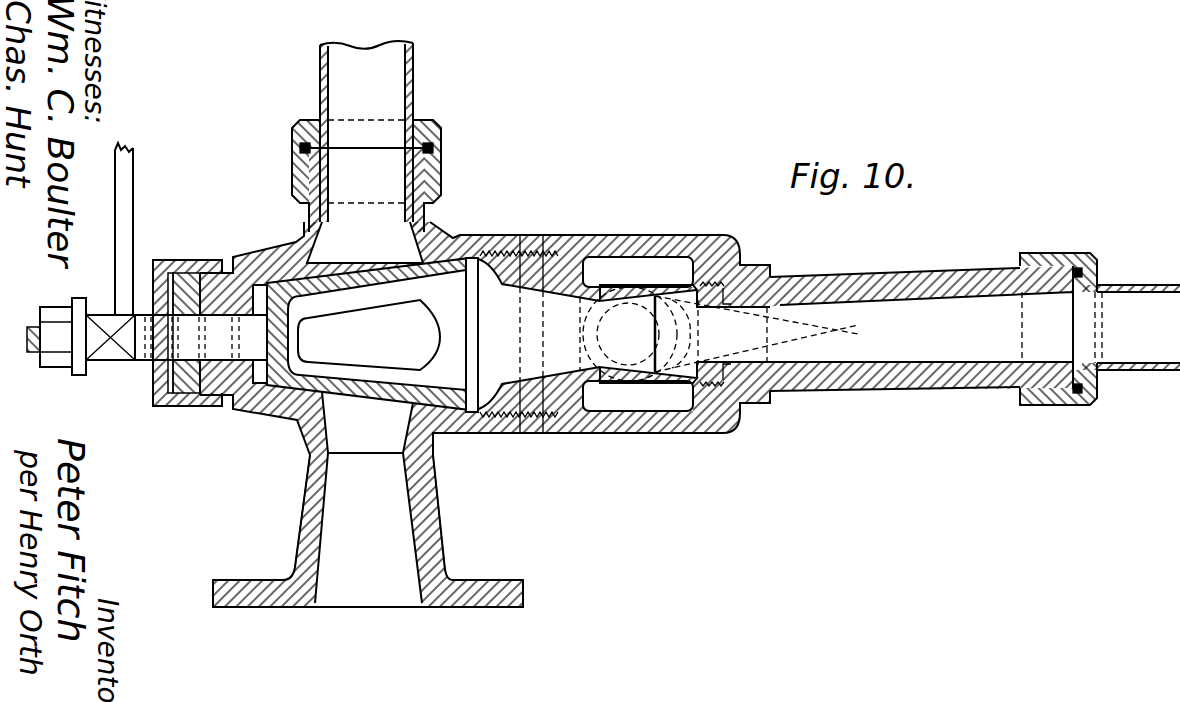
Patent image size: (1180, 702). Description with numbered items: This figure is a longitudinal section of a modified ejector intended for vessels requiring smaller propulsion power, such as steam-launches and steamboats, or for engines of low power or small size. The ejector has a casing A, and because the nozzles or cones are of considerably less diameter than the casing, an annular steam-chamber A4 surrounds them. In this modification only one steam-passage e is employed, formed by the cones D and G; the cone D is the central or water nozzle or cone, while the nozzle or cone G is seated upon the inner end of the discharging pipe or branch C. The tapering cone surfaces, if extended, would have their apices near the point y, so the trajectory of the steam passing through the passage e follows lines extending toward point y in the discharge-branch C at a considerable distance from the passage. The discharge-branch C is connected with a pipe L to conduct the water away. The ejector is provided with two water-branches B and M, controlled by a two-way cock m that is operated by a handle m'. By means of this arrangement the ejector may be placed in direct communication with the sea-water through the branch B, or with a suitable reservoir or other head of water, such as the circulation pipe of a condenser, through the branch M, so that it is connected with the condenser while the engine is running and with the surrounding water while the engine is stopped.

The casing A is at (461, 414).
The annular steam-chamber A4 is at (638, 334).
The water-branch B is at (370, 512).
The discharging pipe or branch C is at (885, 328).
The cone D is at (521, 303).
The nozzle or cone G is at (648, 332).
The pipe L is at (1100, 329).
The water-branch M is at (366, 146).
The annular steam-passage e is at (611, 297).
The two-way cock m is at (372, 335).
The handle m' is at (147, 259).
The point y is at (756, 334).